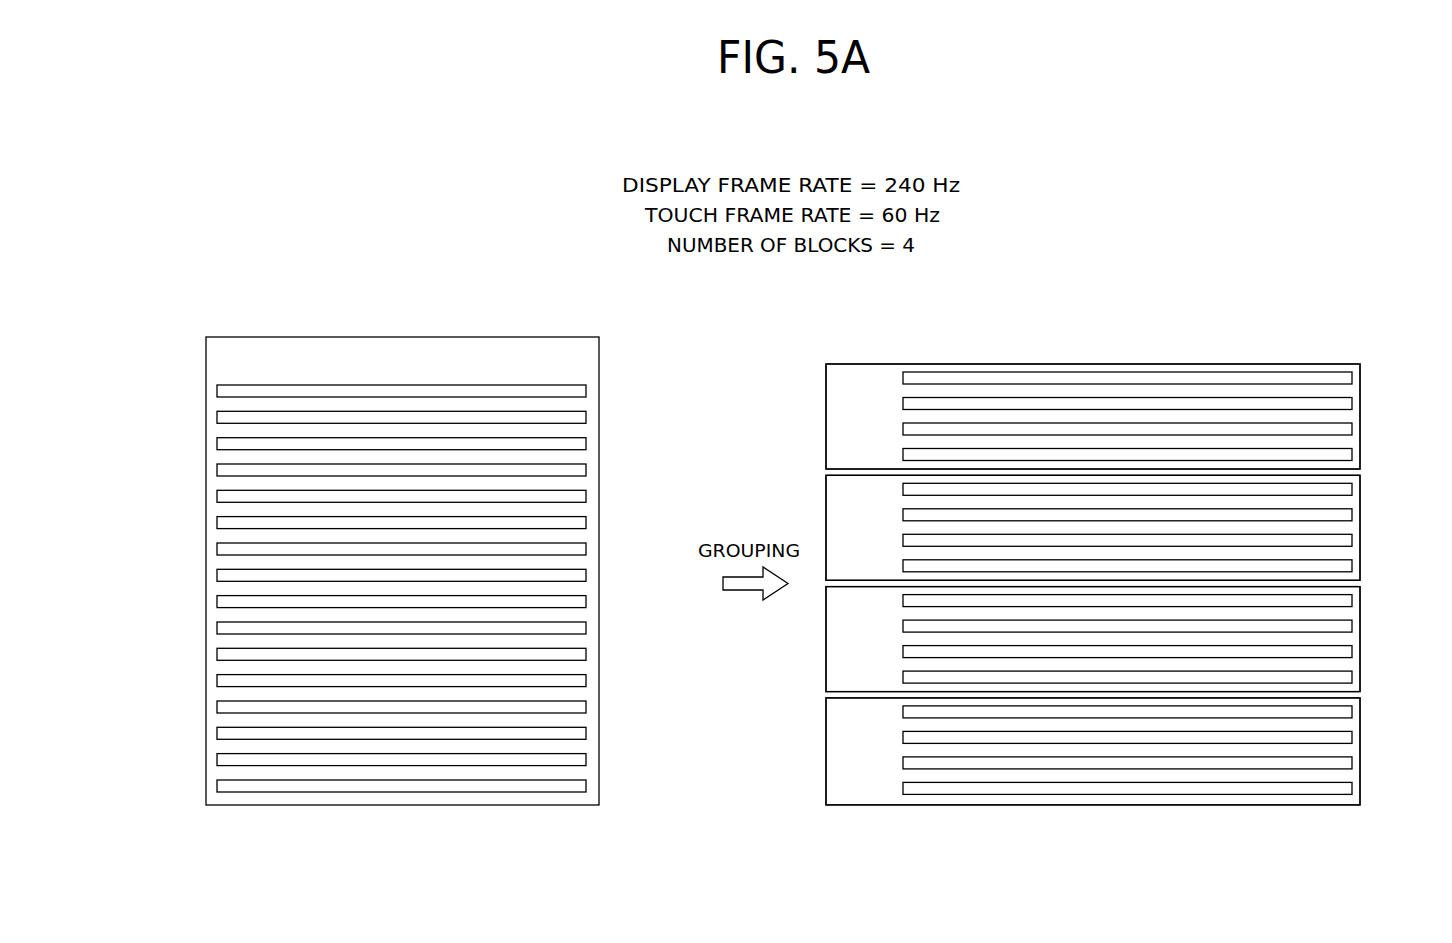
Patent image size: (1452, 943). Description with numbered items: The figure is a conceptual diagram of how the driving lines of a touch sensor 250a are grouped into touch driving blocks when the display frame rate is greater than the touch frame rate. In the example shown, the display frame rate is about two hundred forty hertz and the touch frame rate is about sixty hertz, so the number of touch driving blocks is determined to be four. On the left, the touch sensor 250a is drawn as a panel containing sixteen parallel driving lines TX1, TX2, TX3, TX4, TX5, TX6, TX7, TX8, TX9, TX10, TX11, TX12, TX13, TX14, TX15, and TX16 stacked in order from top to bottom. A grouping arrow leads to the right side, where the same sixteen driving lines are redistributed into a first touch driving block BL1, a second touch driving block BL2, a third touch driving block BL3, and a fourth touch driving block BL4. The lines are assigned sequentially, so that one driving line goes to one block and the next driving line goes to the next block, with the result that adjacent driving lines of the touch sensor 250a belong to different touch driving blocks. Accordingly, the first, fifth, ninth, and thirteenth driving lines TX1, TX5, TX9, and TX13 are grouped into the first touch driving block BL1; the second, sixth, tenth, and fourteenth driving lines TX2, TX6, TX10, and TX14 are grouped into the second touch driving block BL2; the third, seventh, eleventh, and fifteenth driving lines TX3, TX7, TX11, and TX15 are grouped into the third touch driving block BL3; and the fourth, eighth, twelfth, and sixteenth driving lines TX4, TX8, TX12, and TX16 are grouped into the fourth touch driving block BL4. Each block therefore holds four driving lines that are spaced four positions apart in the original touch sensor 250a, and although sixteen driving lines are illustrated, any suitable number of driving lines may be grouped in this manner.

The touch sensor 250a is at (400, 337).
The first touch driving block BL1 is at (1093, 416).
The second touch driving block BL2 is at (1093, 527).
The third touch driving block BL3 is at (1093, 639).
The fourth touch driving block BL4 is at (1093, 751).
The first driving line TX1 is at (217, 391).
The second driving line TX2 is at (586, 417).
The third driving line TX3 is at (217, 444).
The fourth driving line TX4 is at (586, 470).
The fifth driving line TX5 is at (217, 496).
The sixth driving line TX6 is at (586, 523).
The seventh driving line TX7 is at (217, 549).
The eighth driving line TX8 is at (586, 575).
The ninth driving line TX9 is at (217, 602).
The tenth driving line TX10 is at (586, 628).
The eleventh driving line TX11 is at (217, 654).
The twelfth driving line TX12 is at (586, 681).
The thirteenth driving line TX13 is at (217, 707).
The fourteenth driving line TX14 is at (586, 733).
The fifteenth driving line TX15 is at (217, 760).
The sixteenth driving line TX16 is at (586, 786).